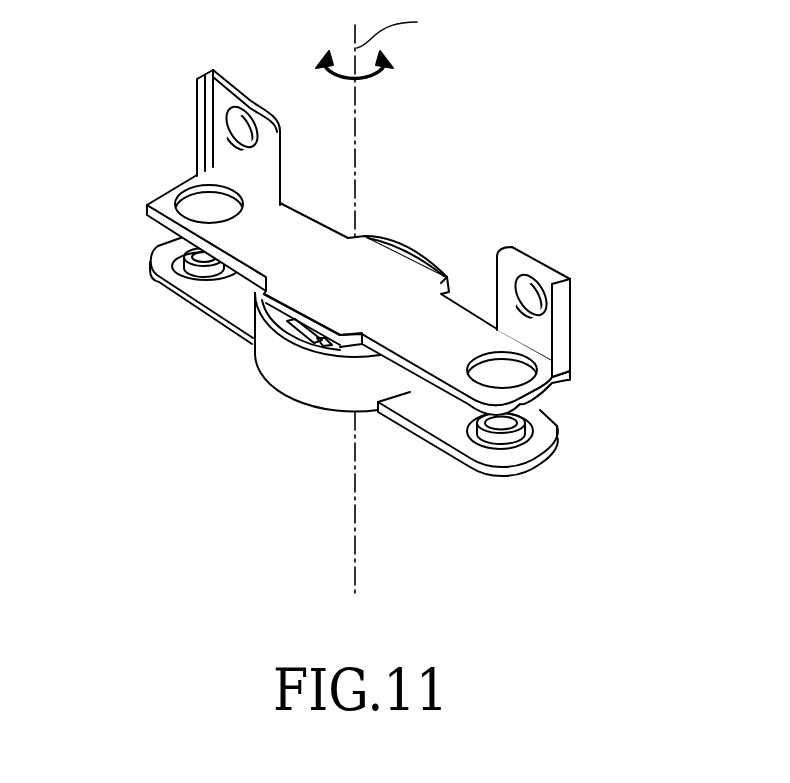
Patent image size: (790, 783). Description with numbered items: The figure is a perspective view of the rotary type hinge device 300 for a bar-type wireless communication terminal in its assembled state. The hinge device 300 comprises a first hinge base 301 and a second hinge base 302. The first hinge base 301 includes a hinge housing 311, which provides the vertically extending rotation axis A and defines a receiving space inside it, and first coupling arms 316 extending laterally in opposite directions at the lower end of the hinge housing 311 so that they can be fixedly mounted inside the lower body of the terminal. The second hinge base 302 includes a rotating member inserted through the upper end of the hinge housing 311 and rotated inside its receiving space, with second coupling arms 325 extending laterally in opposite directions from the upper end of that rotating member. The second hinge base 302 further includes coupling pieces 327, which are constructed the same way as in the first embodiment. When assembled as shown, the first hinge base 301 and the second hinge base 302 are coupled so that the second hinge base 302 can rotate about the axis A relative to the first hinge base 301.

The rotary type hinge device 300 is at (611, 89).
The first hinge base 301 is at (250, 388).
The second hinge base 302 is at (397, 224).
The hinge housing 311 is at (307, 393).
The first coupling arms 316 is at (217, 293).
The second coupling arms 325 is at (311, 228).
The coupling pieces 327 is at (197, 125).